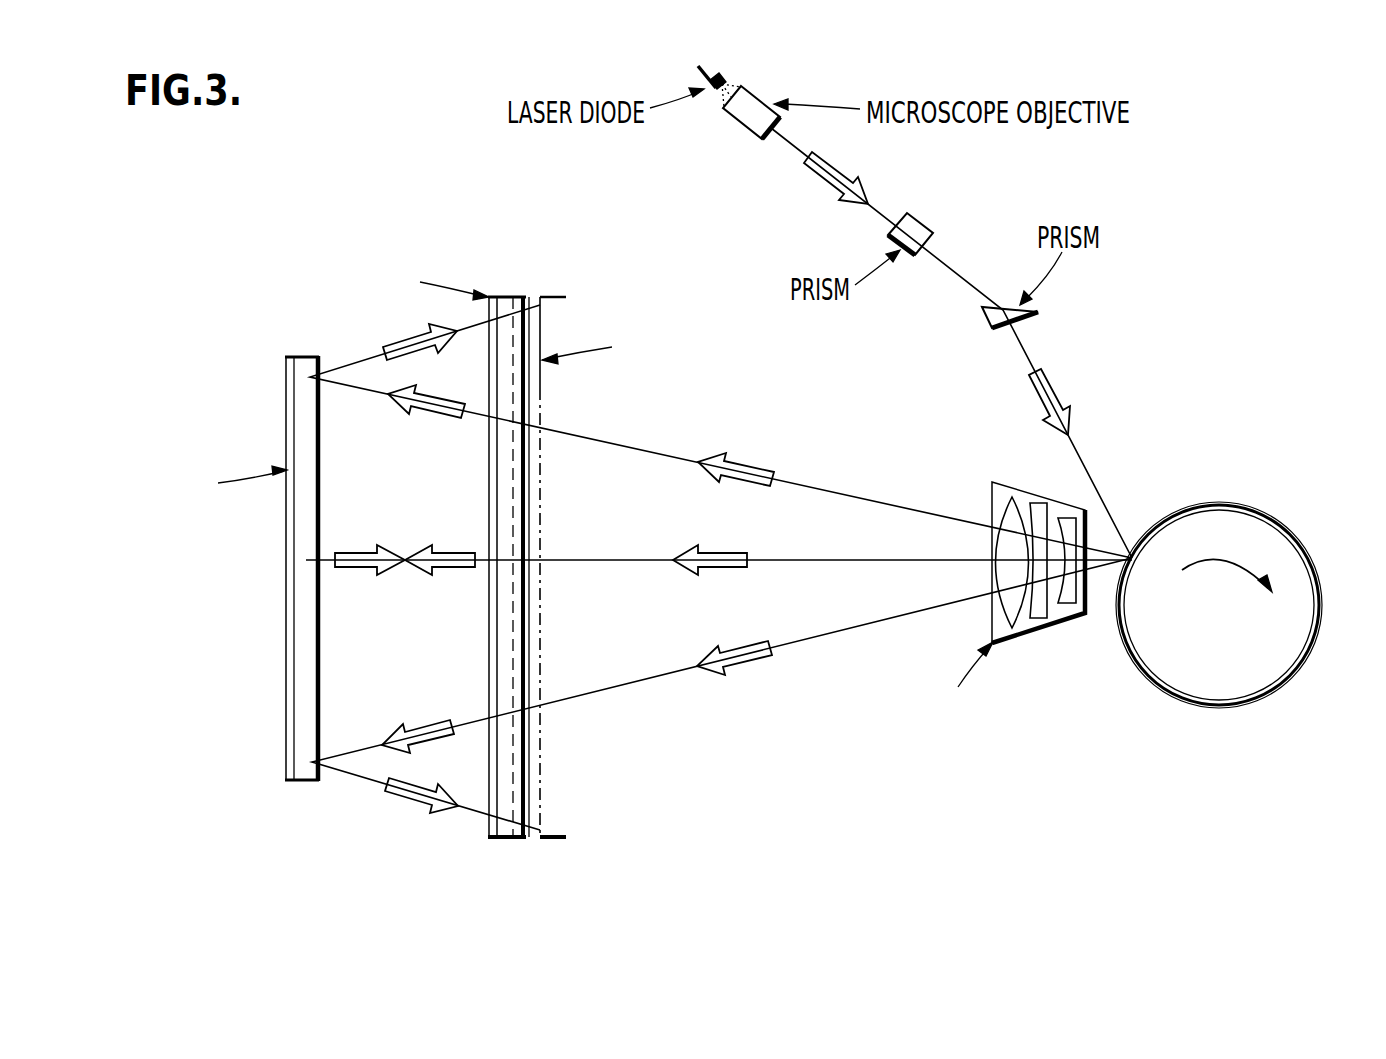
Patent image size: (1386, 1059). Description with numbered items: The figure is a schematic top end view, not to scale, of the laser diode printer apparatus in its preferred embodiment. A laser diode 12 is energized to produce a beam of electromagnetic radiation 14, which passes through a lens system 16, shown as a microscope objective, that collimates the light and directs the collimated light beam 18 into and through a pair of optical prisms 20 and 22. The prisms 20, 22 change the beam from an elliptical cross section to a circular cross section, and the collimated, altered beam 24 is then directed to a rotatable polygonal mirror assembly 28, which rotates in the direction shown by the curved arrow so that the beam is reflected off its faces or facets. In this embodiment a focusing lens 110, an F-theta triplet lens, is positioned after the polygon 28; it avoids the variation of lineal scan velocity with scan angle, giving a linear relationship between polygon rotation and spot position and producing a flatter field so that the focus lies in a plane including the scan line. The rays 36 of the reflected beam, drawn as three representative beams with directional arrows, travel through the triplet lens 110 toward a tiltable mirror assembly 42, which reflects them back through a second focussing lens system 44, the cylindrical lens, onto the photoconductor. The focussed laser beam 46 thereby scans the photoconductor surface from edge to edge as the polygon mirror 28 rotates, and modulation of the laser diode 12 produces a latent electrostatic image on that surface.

The laser diode 12 is at (707, 96).
The beam of electromagnetic radiation 14 is at (722, 100).
The lens system 16 is at (759, 127).
The collimated light beam 18 is at (848, 177).
The optical prism 20 is at (918, 228).
The optical prism 22 is at (1048, 306).
The collimated altered beam 24 is at (1092, 462).
The rotatable polygonal mirror assembly 28 is at (1232, 507).
The rays of the reflected beam 36 is at (742, 470).
The tiltable mirror assembly 42 is at (288, 662).
The second focussing lens system 44 is at (505, 296).
The focussed laser beam 46 is at (530, 302).
The focusing lens 110 is at (1052, 620).